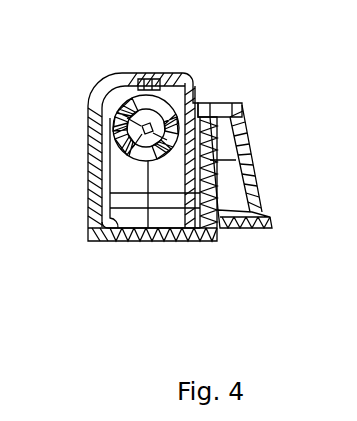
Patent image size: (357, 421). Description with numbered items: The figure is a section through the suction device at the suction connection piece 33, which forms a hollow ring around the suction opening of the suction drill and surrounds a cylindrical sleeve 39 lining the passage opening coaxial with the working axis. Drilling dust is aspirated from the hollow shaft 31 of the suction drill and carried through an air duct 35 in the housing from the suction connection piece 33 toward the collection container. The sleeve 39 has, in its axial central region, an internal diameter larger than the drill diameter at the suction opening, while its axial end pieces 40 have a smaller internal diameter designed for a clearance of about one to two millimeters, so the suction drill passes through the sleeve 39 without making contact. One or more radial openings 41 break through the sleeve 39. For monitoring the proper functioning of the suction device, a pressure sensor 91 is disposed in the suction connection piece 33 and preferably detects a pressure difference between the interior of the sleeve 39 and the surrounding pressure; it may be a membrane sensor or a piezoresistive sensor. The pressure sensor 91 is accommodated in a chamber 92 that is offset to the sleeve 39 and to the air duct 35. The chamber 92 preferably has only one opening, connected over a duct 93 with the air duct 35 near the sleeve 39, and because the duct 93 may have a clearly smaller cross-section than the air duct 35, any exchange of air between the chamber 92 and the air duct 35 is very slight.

The suction connection piece 33 is at (77, 58).
The air duct 35 is at (135, 220).
The axial end pieces 40 is at (148, 95).
The radial openings 41 is at (123, 116).
The hollow shaft 31 is at (150, 122).
The cylindrical sleeve 39 is at (180, 124).
The duct 93 is at (210, 122).
The chamber 92 is at (223, 178).
The pressure sensor 91 is at (228, 193).